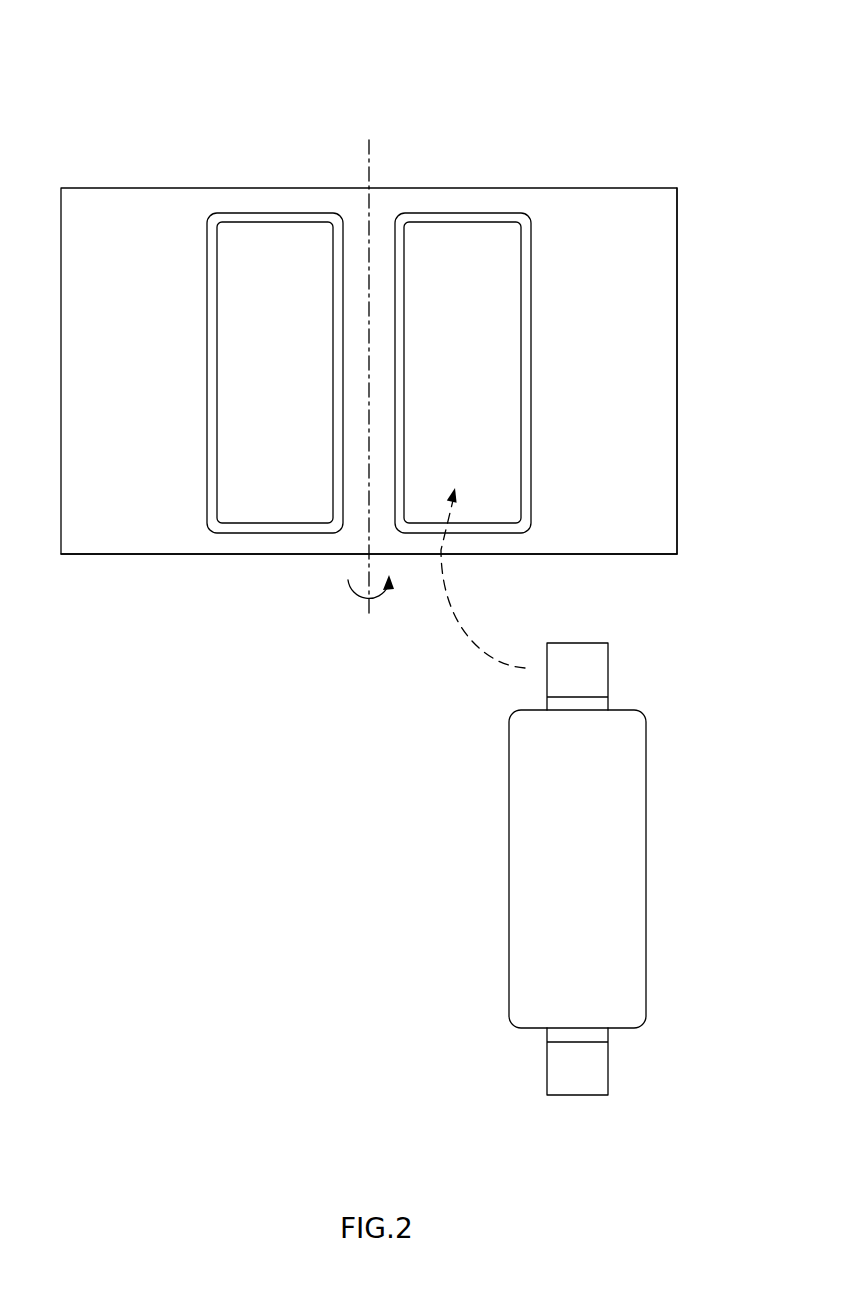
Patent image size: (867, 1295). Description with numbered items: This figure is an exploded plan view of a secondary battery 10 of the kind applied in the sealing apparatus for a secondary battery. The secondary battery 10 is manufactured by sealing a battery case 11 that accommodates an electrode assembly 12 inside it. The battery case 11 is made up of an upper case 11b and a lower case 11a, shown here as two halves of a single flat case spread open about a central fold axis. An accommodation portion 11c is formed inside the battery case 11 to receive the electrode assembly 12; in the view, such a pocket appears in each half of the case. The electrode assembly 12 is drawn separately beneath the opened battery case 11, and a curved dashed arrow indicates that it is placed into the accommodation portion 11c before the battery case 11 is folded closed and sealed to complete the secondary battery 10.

The secondary battery 10 is at (641, 70).
The battery case 11 is at (613, 168).
The lower case 11a is at (660, 372).
The upper case 11b is at (133, 540).
The accommodation portion 11c is at (452, 268).
The electrode assembly 12 is at (664, 783).